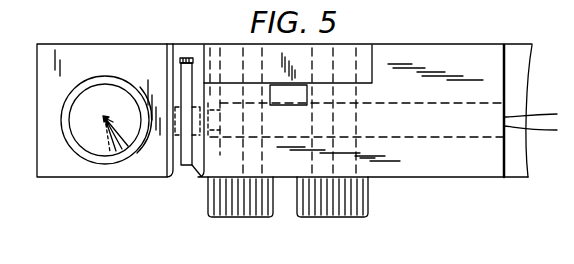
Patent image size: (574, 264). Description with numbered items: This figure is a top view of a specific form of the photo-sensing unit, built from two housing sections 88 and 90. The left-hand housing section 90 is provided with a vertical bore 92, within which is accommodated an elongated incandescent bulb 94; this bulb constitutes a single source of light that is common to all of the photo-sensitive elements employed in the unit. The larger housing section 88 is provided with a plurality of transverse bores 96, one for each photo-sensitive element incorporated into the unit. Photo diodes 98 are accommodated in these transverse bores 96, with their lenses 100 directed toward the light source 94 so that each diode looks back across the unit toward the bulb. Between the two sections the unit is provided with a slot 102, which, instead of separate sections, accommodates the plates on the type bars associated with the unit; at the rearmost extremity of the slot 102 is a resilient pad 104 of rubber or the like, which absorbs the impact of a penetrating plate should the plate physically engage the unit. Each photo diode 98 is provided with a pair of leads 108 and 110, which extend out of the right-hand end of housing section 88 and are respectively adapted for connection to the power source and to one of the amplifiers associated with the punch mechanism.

The housing section 88 is at (478, 177).
The housing section 90 is at (122, 37).
The vertical bore 92 is at (84, 154).
The incandescent bulb 94 is at (90, 100).
The transverse bores 96 is at (188, 102).
The photo diodes 98 is at (423, 140).
The lenses 100 is at (211, 44).
The slot 102 is at (185, 169).
The resilient pad 104 is at (186, 57).
The lead 108 is at (548, 114).
The lead 110 is at (543, 131).